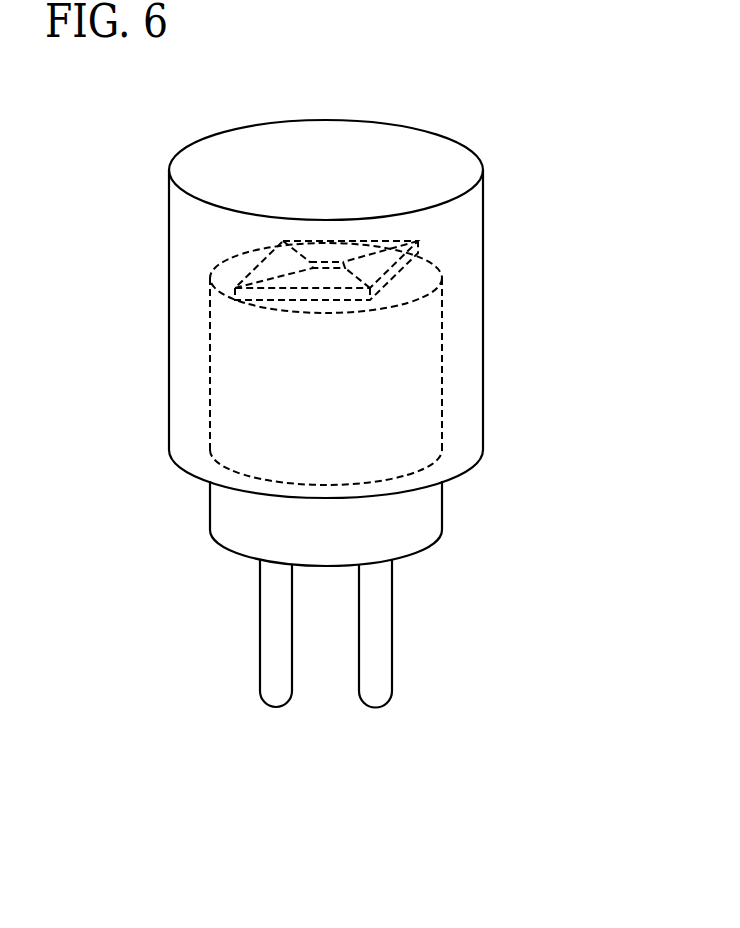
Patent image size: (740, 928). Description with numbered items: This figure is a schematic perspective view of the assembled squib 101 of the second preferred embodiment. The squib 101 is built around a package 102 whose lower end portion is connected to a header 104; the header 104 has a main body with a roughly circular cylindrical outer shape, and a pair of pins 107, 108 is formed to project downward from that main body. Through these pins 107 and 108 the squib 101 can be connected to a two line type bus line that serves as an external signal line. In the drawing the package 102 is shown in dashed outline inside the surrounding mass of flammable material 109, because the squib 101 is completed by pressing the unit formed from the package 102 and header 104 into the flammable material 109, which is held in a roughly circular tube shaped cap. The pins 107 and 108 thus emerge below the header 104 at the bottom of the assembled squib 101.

The squib 101 is at (549, 119).
The package 102 is at (450, 362).
The header 104 is at (447, 537).
The pin 107 is at (275, 701).
The pin 108 is at (375, 703).
The flammable material 109 is at (483, 231).